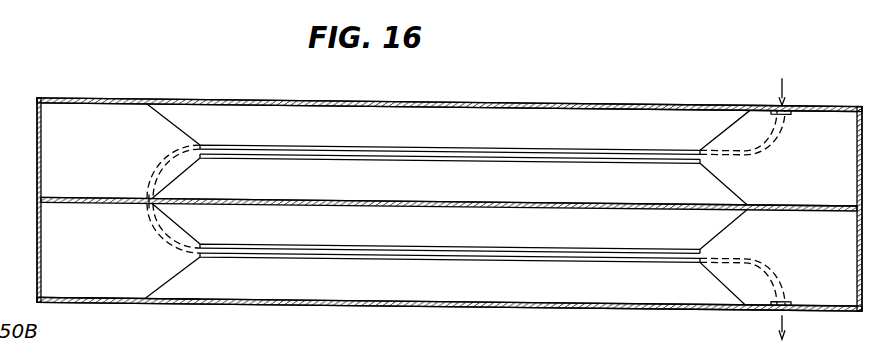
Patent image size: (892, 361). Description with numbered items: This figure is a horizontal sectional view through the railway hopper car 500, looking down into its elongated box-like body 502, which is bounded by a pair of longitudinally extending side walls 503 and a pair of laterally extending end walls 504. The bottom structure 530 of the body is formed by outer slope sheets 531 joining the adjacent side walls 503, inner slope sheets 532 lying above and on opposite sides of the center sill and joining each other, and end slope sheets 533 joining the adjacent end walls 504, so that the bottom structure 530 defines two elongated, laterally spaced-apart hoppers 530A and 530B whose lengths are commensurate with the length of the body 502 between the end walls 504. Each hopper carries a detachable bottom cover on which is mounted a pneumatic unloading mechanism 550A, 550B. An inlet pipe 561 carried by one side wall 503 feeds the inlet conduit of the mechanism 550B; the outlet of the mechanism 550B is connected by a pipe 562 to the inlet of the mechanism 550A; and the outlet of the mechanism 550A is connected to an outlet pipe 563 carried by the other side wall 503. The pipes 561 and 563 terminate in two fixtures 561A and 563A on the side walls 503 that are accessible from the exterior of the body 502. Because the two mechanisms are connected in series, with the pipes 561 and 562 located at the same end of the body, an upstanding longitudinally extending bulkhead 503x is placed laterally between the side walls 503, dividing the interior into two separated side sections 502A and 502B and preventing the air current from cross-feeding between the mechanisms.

The railway hopper car 500 is at (599, 74).
The body 502 is at (398, 307).
The side section 502A is at (131, 288).
The side section 502B is at (120, 112).
The side wall 503 is at (356, 104).
The bulkhead 503x is at (313, 198).
The end wall 504 is at (857, 133).
The bottom structure 530 is at (465, 199).
The hopper 530A is at (517, 249).
The hopper 530B is at (580, 147).
The outer slope sheet 531 is at (275, 133).
The inner slope sheet 532 is at (282, 191).
The end slope sheet 533 is at (112, 253).
The pneumatic unloading mechanism 550A is at (370, 247).
The pneumatic unloading mechanism 550B is at (439, 146).
The inlet pipe 561 is at (770, 150).
The fixture 561A is at (793, 105).
The pipe 562 is at (160, 168).
The outlet pipe 563 is at (766, 263).
The fixture 563A is at (790, 313).